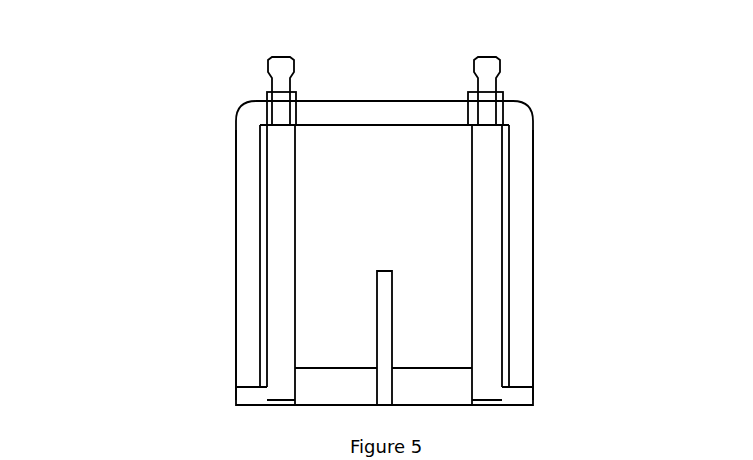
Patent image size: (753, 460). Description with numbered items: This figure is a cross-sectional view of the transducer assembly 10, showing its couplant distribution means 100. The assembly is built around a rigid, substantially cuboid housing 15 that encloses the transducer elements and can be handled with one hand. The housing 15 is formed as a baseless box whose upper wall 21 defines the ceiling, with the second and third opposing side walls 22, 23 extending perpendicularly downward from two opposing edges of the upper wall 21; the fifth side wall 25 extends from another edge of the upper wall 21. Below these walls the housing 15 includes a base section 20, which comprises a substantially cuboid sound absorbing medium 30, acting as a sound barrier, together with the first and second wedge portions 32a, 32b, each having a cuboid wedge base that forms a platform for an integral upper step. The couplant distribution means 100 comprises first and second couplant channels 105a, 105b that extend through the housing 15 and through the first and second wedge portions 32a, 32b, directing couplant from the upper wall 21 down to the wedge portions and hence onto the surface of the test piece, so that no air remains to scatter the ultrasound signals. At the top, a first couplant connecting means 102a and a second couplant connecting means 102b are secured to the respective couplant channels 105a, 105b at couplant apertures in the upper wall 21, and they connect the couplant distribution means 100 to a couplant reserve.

The transducer assembly 10 is at (123, 48).
The couplant distribution means 100 is at (233, 68).
The housing 15 is at (550, 138).
The upper wall 21 is at (393, 122).
The first couplant connecting means 102a is at (280, 55).
The second couplant connecting means 102b is at (503, 60).
The first couplant channel 105a is at (280, 178).
The second couplant channel 105b is at (527, 181).
The second side wall 22 is at (248, 262).
The third side wall 23 is at (522, 285).
The base section 20 is at (248, 400).
The fifth side wall 25 is at (502, 414).
The sound absorbing medium 30 is at (388, 317).
The first wedge portion 32a is at (355, 390).
The second wedge portion 32b is at (452, 390).